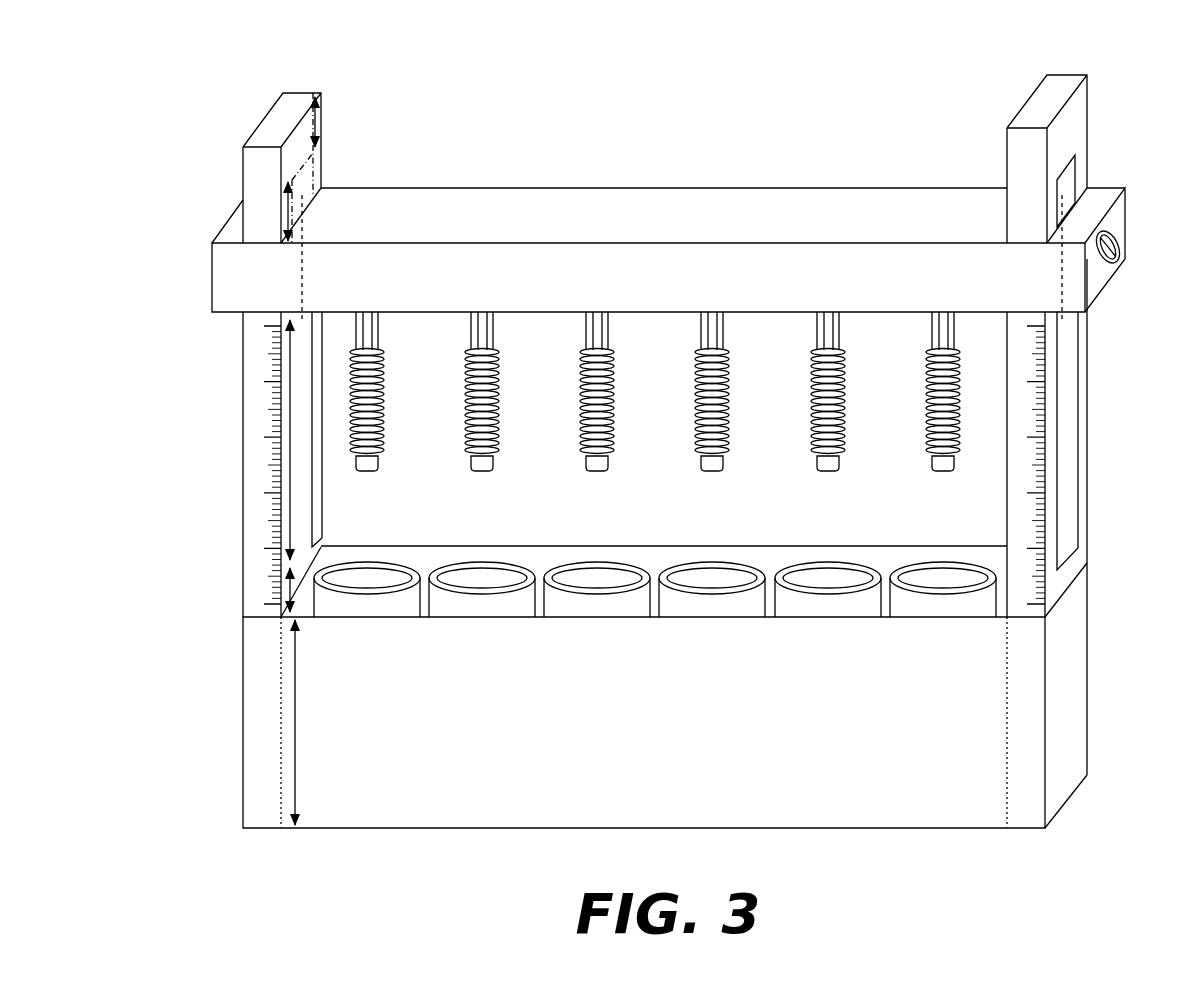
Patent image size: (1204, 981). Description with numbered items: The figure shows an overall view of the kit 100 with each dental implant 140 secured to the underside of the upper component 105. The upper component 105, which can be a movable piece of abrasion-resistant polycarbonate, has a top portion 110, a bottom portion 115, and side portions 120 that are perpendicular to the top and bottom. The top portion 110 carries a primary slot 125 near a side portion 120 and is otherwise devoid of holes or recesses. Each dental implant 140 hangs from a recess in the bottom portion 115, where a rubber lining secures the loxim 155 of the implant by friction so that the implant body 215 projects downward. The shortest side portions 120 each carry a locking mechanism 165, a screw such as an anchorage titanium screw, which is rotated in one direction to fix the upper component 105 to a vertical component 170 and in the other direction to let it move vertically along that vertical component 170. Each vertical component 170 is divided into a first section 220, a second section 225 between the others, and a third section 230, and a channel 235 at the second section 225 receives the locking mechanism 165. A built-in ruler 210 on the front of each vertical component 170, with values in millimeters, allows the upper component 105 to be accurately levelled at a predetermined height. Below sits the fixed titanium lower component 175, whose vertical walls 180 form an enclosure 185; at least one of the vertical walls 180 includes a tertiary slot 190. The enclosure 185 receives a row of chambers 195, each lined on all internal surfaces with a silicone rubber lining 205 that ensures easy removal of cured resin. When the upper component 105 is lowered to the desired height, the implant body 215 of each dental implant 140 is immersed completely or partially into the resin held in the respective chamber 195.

The kit 100 is at (654, 39).
The upper component 105 is at (540, 150).
The top portion 110 is at (593, 210).
The bottom portion 115 is at (767, 328).
The side portion 120 is at (211, 292).
The primary slot 125 is at (1082, 203).
The dental implant 140 is at (382, 472).
The loxim 155 is at (583, 318).
The locking mechanism 165 is at (1116, 226).
The vertical component 170 is at (284, 80).
The lower component 175 is at (345, 834).
The vertical walls 180 is at (724, 808).
The enclosure 185 is at (770, 557).
The tertiary slot 190 is at (326, 552).
The chamber 195 is at (398, 612).
The silicone rubber lining 205 is at (575, 560).
The built-in ruler 210 is at (1050, 400).
The implant body 215 is at (620, 400).
The first section 220 is at (327, 120).
The second section 225 is at (296, 221).
The third section 230 is at (288, 735).
The channel 235 is at (305, 325).